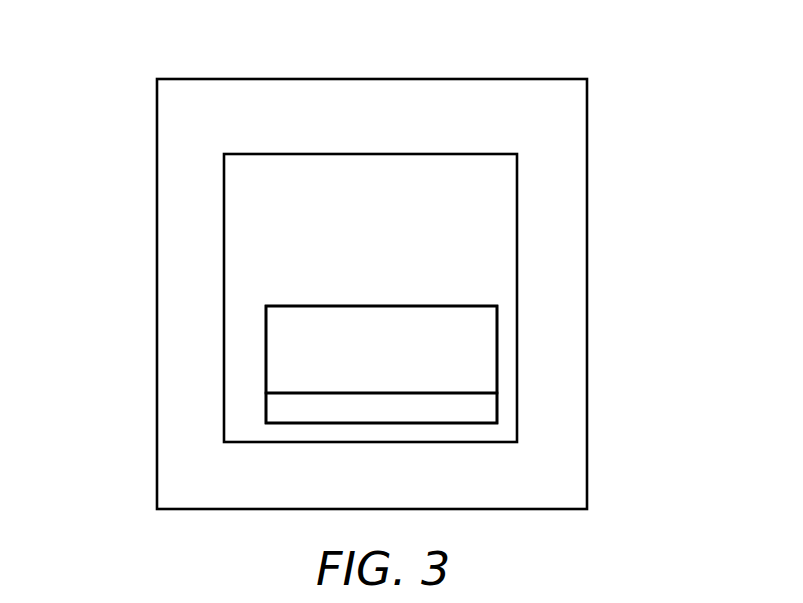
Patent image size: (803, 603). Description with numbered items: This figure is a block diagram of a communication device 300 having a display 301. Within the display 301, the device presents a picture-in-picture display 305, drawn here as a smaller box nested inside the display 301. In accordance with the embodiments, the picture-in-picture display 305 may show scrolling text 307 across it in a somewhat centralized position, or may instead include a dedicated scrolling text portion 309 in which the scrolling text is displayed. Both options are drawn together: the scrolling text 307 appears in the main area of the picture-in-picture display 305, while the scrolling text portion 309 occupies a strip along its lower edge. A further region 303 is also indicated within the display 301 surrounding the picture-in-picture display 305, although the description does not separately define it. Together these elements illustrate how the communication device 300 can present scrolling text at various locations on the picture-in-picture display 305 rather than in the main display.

The communication device 300 is at (427, 78).
The display 301 is at (517, 223).
The text display region 303 is at (518, 422).
The picture-in-picture display 305 is at (498, 330).
The scrolling text 307 is at (300, 337).
The scrolling text portion 309 is at (267, 401).